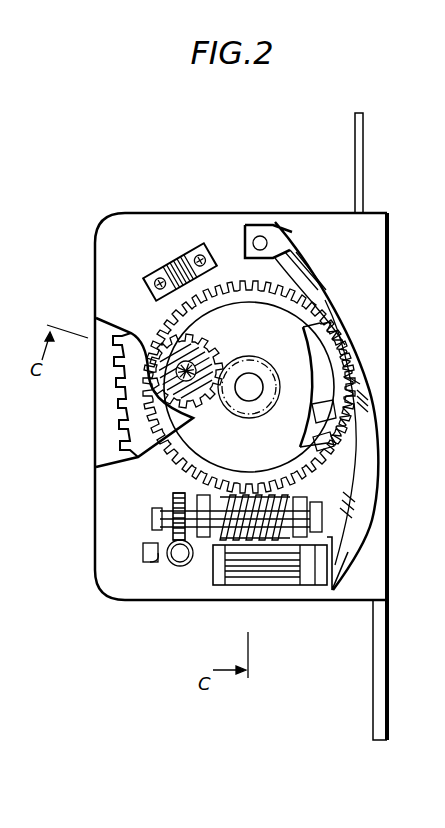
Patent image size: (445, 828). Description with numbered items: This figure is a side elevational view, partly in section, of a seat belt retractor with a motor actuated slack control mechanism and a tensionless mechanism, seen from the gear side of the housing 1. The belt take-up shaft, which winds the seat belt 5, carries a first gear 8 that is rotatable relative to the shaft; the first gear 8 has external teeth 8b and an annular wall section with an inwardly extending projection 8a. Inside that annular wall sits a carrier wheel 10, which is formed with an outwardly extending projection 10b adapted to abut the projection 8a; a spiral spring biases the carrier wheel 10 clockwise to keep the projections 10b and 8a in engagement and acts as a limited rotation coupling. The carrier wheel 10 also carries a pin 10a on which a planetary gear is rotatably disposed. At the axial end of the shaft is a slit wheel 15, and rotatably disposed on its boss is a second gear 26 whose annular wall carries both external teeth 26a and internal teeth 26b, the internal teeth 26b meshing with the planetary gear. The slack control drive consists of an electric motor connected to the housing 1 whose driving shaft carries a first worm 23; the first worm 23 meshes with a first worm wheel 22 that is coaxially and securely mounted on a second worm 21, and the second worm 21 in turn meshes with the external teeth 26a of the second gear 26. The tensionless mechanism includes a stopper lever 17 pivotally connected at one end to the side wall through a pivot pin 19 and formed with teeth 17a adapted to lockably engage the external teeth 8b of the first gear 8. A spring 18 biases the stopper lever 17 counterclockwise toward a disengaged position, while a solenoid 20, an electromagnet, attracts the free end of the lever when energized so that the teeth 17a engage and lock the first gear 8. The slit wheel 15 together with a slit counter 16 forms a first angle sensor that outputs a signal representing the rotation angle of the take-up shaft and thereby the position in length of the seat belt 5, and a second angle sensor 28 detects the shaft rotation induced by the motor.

The housing 1 is at (172, 208).
The seat belt 5 is at (364, 157).
The first gear 8 is at (372, 402).
The projection 8a is at (318, 446).
The external teeth 8b is at (343, 342).
The carrier wheel 10 is at (316, 378).
The pin 10a is at (165, 366).
The projection 10b is at (320, 418).
The slit wheel 15 is at (142, 429).
The slit counter 16 is at (172, 262).
The stopper lever 17 is at (384, 432).
The teeth 17a is at (352, 390).
The spring 18 is at (311, 382).
The pivot pin 19 is at (268, 243).
The solenoid 20 is at (282, 575).
The second worm 21 is at (210, 540).
The first worm wheel 22 is at (143, 549).
The first worm 23 is at (178, 568).
The second gear 26 is at (111, 498).
The external teeth 26a is at (178, 514).
The internal teeth 26b is at (176, 486).
The second angle sensor 28 is at (150, 565).